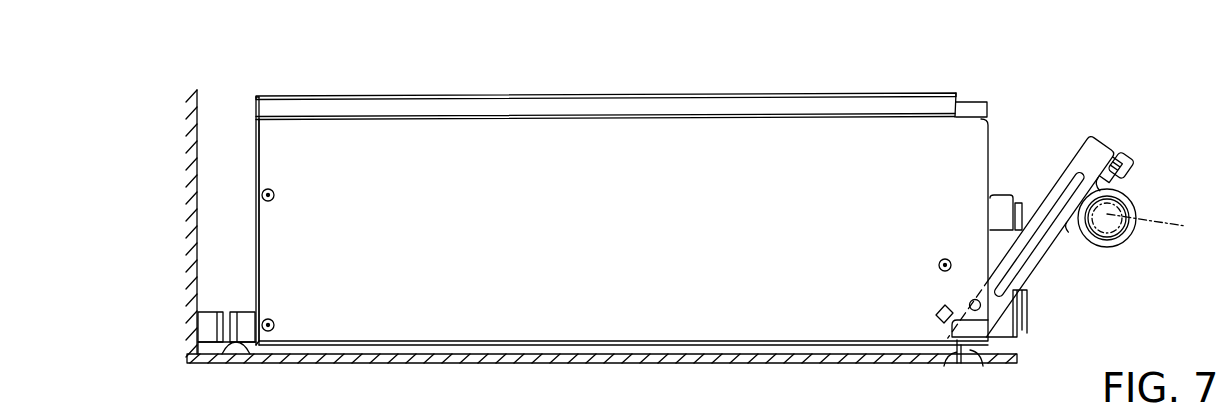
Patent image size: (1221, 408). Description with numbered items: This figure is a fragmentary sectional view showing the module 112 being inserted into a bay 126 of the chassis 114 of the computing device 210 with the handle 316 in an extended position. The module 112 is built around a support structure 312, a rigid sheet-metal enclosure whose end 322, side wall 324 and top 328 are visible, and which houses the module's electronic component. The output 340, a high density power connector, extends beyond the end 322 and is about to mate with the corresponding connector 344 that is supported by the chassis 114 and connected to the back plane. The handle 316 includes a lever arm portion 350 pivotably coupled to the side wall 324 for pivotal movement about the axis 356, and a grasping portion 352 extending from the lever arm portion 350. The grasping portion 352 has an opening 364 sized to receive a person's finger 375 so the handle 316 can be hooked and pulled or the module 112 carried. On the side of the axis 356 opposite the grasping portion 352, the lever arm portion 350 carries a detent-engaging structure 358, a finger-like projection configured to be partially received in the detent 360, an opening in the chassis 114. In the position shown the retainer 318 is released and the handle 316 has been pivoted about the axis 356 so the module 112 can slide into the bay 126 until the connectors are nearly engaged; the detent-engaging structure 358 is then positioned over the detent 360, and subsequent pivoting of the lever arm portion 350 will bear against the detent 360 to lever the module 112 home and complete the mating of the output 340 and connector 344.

The module 112 is at (668, 64).
The chassis 114 is at (786, 362).
The bay 126 is at (228, 355).
The computing device 210 is at (960, 64).
The support structure 312 is at (578, 92).
The handle 316 is at (1102, 134).
The retainer 318 is at (1128, 154).
The end 322 is at (254, 152).
The side wall 324 is at (623, 232).
The top 328 is at (847, 92).
The output 340 is at (245, 310).
The connector 344 is at (210, 310).
The lever arm portion 350 is at (1075, 152).
The grasping portion 352 is at (1135, 204).
The axis 356 is at (981, 306).
The detent-engaging structure 358 is at (972, 345).
The detent 360 is at (943, 352).
The opening 364 is at (1136, 236).
The finger 375 is at (1156, 221).